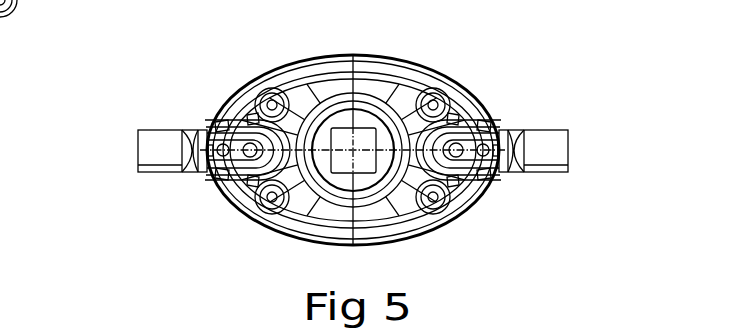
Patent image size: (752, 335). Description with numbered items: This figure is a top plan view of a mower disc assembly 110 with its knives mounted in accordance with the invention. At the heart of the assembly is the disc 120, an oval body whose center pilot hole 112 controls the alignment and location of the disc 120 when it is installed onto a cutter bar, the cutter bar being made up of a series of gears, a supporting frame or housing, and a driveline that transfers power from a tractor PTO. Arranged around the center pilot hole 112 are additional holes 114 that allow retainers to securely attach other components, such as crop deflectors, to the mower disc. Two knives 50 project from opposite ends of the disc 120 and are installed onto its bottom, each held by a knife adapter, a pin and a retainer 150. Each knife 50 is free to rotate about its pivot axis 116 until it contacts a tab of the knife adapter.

The mower disc assembly 110 is at (586, 58).
The center pilot hole 112 is at (316, 58).
The additional holes 114 is at (434, 100).
The pivot axis 116 is at (481, 118).
The disc 120 is at (337, 87).
The retainer 150 is at (200, 170).
The knives 50 is at (157, 152).